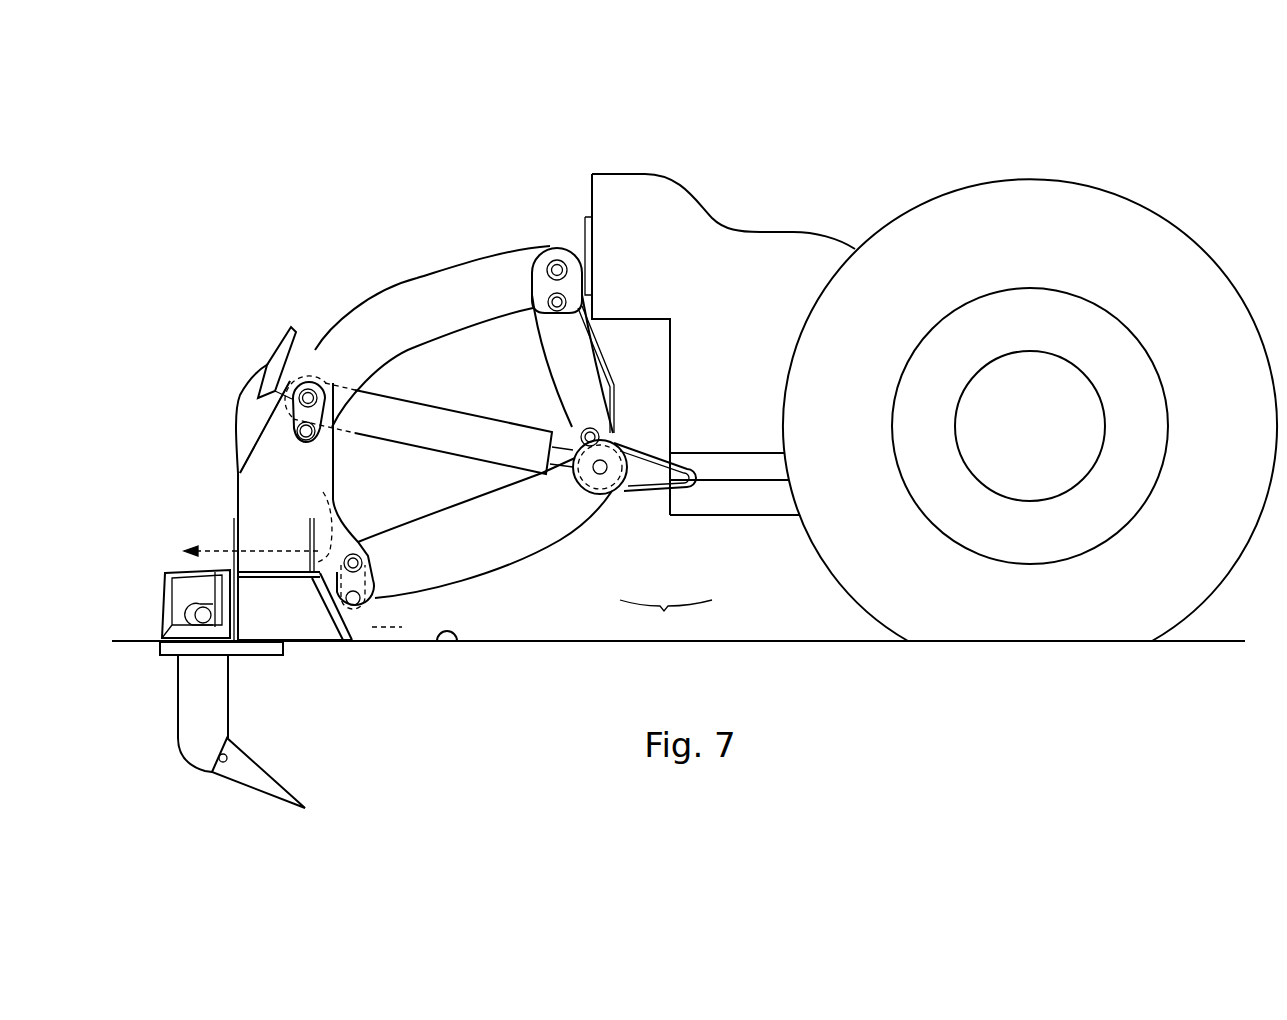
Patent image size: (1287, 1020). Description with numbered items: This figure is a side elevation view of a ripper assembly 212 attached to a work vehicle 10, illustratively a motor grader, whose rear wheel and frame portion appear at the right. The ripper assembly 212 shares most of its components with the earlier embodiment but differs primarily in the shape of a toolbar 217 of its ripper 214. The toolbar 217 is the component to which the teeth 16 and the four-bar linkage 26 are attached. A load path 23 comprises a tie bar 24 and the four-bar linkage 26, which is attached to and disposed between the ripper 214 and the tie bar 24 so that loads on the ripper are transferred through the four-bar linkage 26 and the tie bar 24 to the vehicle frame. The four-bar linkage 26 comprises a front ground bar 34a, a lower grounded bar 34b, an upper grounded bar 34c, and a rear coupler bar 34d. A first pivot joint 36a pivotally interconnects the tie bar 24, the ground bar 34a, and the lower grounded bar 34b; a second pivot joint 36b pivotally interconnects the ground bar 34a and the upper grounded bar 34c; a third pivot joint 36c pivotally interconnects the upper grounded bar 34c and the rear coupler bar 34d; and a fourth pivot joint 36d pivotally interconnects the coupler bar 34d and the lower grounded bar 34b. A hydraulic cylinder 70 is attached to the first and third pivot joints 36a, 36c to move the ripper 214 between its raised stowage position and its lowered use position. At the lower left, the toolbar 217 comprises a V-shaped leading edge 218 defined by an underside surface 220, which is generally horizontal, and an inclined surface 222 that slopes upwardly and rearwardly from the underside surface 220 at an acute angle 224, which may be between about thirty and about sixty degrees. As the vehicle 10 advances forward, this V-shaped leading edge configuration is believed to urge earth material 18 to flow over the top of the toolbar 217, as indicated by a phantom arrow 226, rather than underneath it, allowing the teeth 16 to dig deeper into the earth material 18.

The work vehicle 10 is at (1185, 186).
The teeth 16 is at (217, 698).
The earth material 18 is at (450, 650).
The load path 23 is at (666, 616).
The tie bar 24 is at (740, 472).
The four-bar linkage 26 is at (577, 549).
The front ground bar 34a is at (556, 347).
The lower grounded bar 34b is at (470, 573).
The upper grounded bar 34c is at (408, 300).
The rear coupler bar 34d is at (260, 463).
The first pivot joint 36a is at (621, 427).
The second pivot joint 36b is at (533, 233).
The third pivot joint 36c is at (357, 444).
The fourth pivot joint 36d is at (369, 529).
The hydraulic cylinder 70 is at (467, 418).
The ripper assembly 212 is at (313, 266).
The ripper 214 is at (320, 723).
The toolbar 217 is at (270, 543).
The V-shaped leading edge 218 is at (365, 648).
The underside surface 220 is at (295, 644).
The inclined surface 222 is at (325, 582).
The acute angle 224 is at (327, 601).
The phantom arrow 226 is at (323, 493).